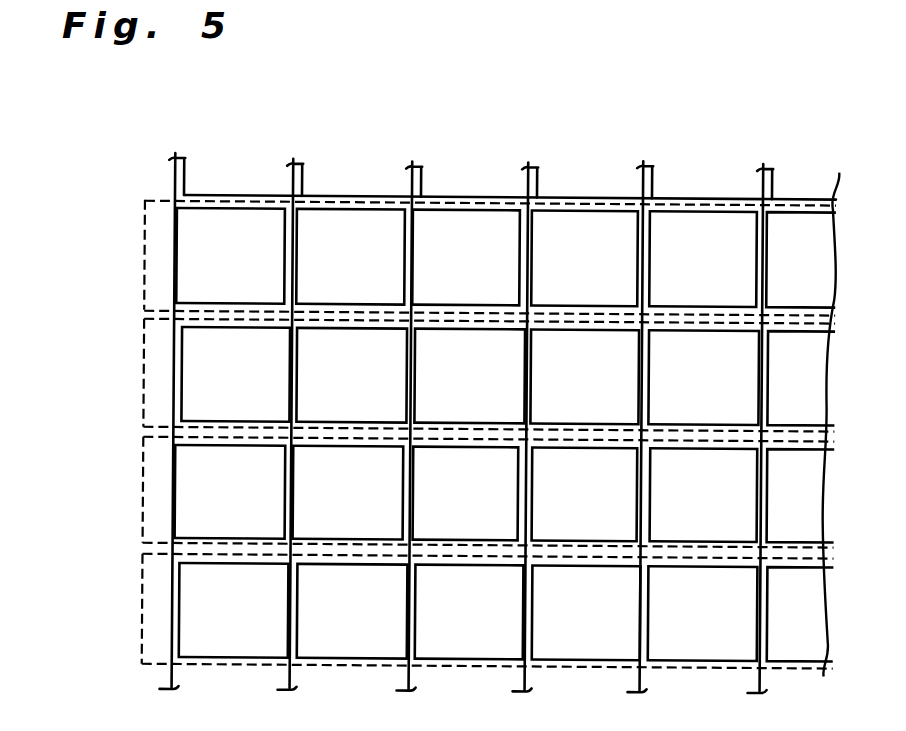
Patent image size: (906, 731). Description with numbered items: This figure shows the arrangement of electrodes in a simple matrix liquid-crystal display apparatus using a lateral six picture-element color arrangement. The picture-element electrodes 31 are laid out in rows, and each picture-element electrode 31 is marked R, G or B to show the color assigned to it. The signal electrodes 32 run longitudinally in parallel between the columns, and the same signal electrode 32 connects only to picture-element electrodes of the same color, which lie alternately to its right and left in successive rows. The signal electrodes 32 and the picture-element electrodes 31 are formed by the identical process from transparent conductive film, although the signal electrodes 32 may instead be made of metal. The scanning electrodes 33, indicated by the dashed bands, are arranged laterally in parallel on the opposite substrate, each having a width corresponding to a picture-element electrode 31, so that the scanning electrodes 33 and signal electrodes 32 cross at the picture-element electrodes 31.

The picture-element electrode 31 is at (334, 247).
The signal electrode 32 is at (302, 178).
The scanning electrode 33 is at (142, 362).